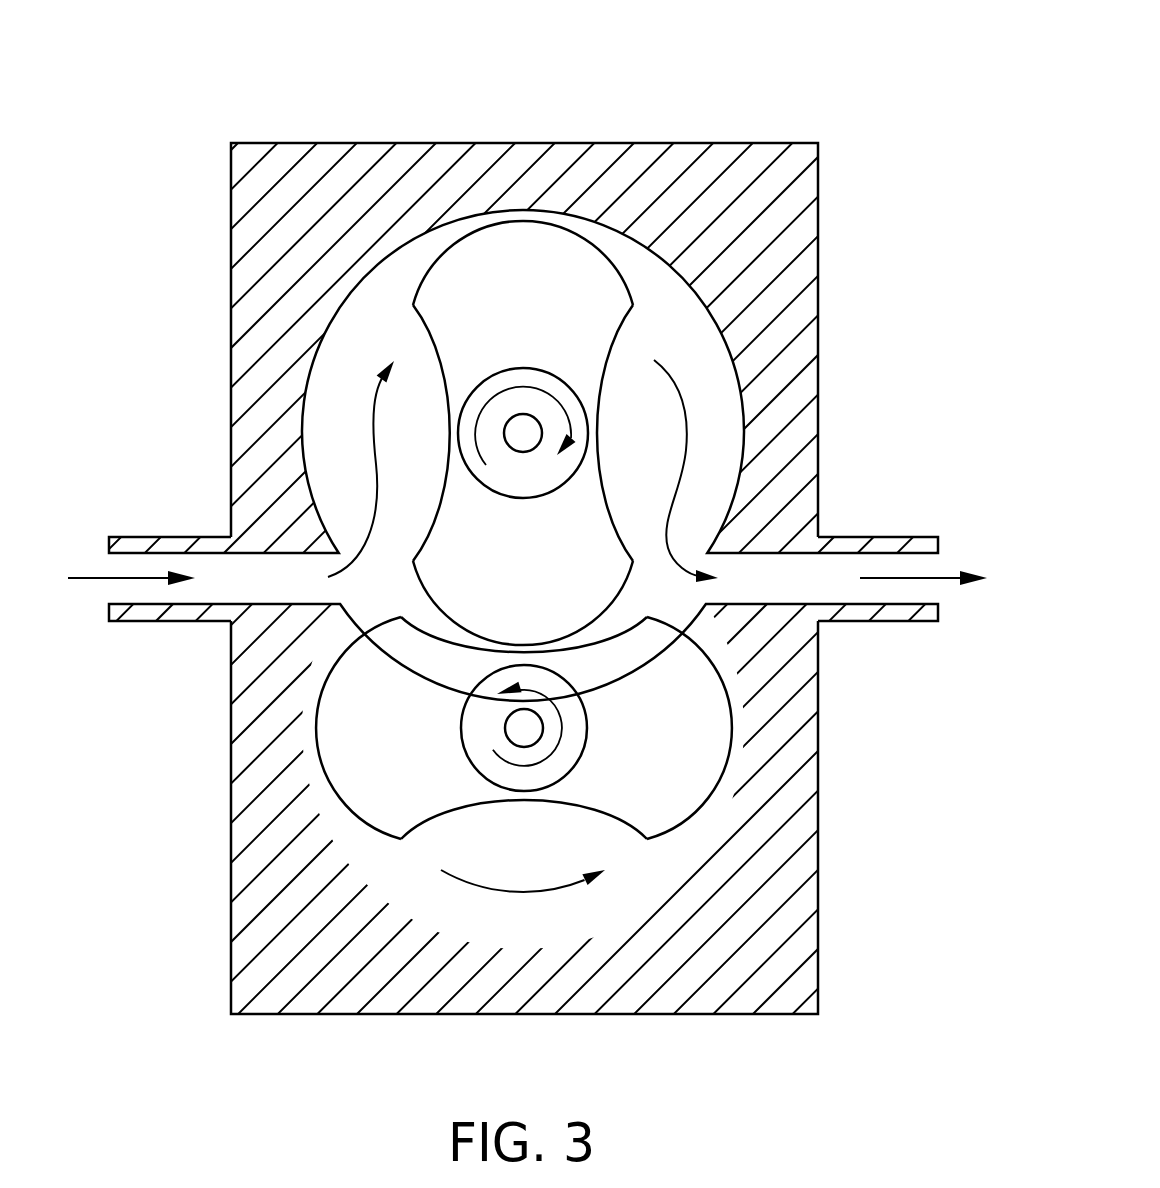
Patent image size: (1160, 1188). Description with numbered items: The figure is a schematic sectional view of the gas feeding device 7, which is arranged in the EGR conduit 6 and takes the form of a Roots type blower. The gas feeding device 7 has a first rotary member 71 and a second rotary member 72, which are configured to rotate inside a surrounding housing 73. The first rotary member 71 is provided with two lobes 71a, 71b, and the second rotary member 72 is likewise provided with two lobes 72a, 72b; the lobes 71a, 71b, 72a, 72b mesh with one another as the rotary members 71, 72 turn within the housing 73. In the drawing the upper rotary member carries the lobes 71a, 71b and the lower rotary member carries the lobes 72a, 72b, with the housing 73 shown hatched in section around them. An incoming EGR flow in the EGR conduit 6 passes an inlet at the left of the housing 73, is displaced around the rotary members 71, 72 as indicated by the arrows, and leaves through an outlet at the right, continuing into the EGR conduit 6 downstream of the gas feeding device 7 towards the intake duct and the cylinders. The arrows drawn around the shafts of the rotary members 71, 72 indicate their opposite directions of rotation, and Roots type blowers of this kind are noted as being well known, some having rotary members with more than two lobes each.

The gas feeding device 7 is at (812, 78).
The housing 73 is at (384, 143).
The EGR conduit 6 is at (90, 578).
The first rotary member 71 is at (523, 433).
The lobe 71a is at (531, 265).
The lobe 71b is at (522, 599).
The second rotary member 72 is at (524, 728).
The lobe 72a is at (355, 728).
The lobe 72b is at (692, 728).